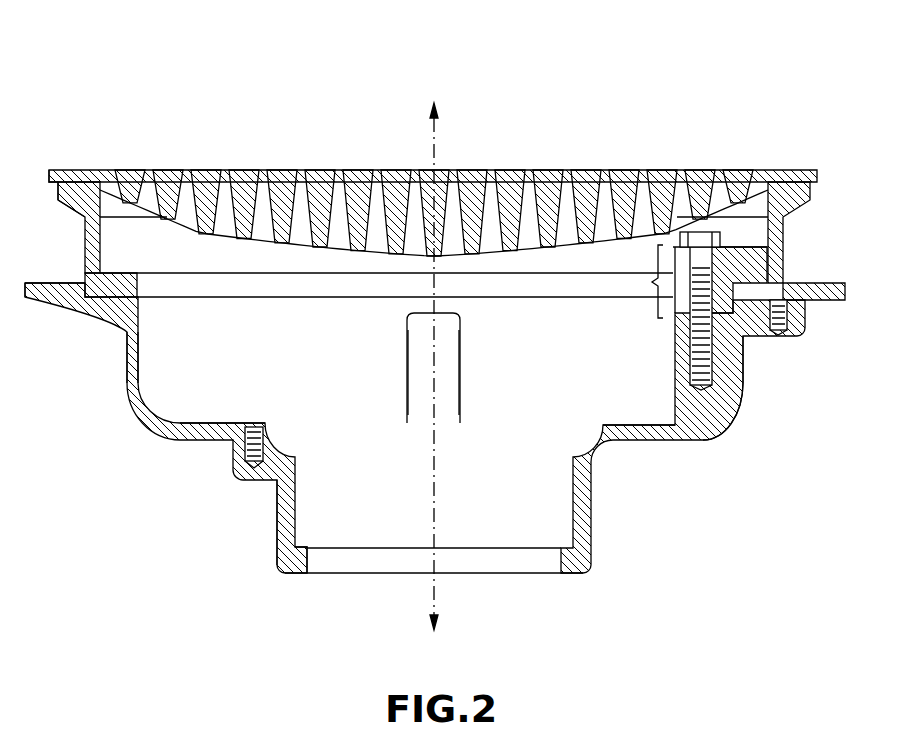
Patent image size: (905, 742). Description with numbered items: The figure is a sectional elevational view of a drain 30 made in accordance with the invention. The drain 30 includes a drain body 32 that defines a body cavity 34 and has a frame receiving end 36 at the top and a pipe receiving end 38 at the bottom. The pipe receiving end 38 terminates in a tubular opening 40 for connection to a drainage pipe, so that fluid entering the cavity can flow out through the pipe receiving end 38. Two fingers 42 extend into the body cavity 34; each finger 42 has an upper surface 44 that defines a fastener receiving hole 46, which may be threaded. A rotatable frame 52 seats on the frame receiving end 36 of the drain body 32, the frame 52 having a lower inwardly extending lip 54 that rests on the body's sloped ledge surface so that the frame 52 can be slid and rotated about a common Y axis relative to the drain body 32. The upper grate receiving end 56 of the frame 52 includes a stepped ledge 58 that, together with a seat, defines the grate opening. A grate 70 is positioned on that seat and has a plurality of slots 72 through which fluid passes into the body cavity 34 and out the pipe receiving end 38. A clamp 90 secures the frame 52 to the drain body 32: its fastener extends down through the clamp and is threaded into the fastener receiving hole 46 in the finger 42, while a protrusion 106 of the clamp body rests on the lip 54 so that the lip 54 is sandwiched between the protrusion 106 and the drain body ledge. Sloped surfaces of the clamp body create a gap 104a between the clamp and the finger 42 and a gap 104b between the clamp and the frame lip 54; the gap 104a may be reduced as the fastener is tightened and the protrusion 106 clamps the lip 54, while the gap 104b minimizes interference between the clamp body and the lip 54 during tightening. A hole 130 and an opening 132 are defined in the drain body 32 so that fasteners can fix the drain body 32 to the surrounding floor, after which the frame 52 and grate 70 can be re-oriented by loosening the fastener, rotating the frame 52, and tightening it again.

The drain 30 is at (722, 60).
The drain body 32 is at (672, 452).
The body cavity 34 is at (203, 382).
The frame receiving end 36 is at (22, 296).
The pipe receiving end 38 is at (282, 553).
The tubular opening 40 is at (350, 562).
The fingers 42 is at (459, 398).
The upper surface 44 is at (420, 312).
The fastener receiving holes 46 is at (685, 340).
The frame 52 is at (800, 215).
The lip 54 is at (117, 273).
The grate receiving end 56 is at (63, 198).
The stepped ledge 58 is at (66, 172).
The grate 70 is at (775, 160).
The slots 72 is at (682, 207).
The clamp 90 is at (643, 281).
The gap 104a is at (742, 385).
The gap 104b is at (760, 337).
The protrusion 106 is at (760, 262).
The hole 130 is at (782, 340).
The opening 132 is at (127, 363).